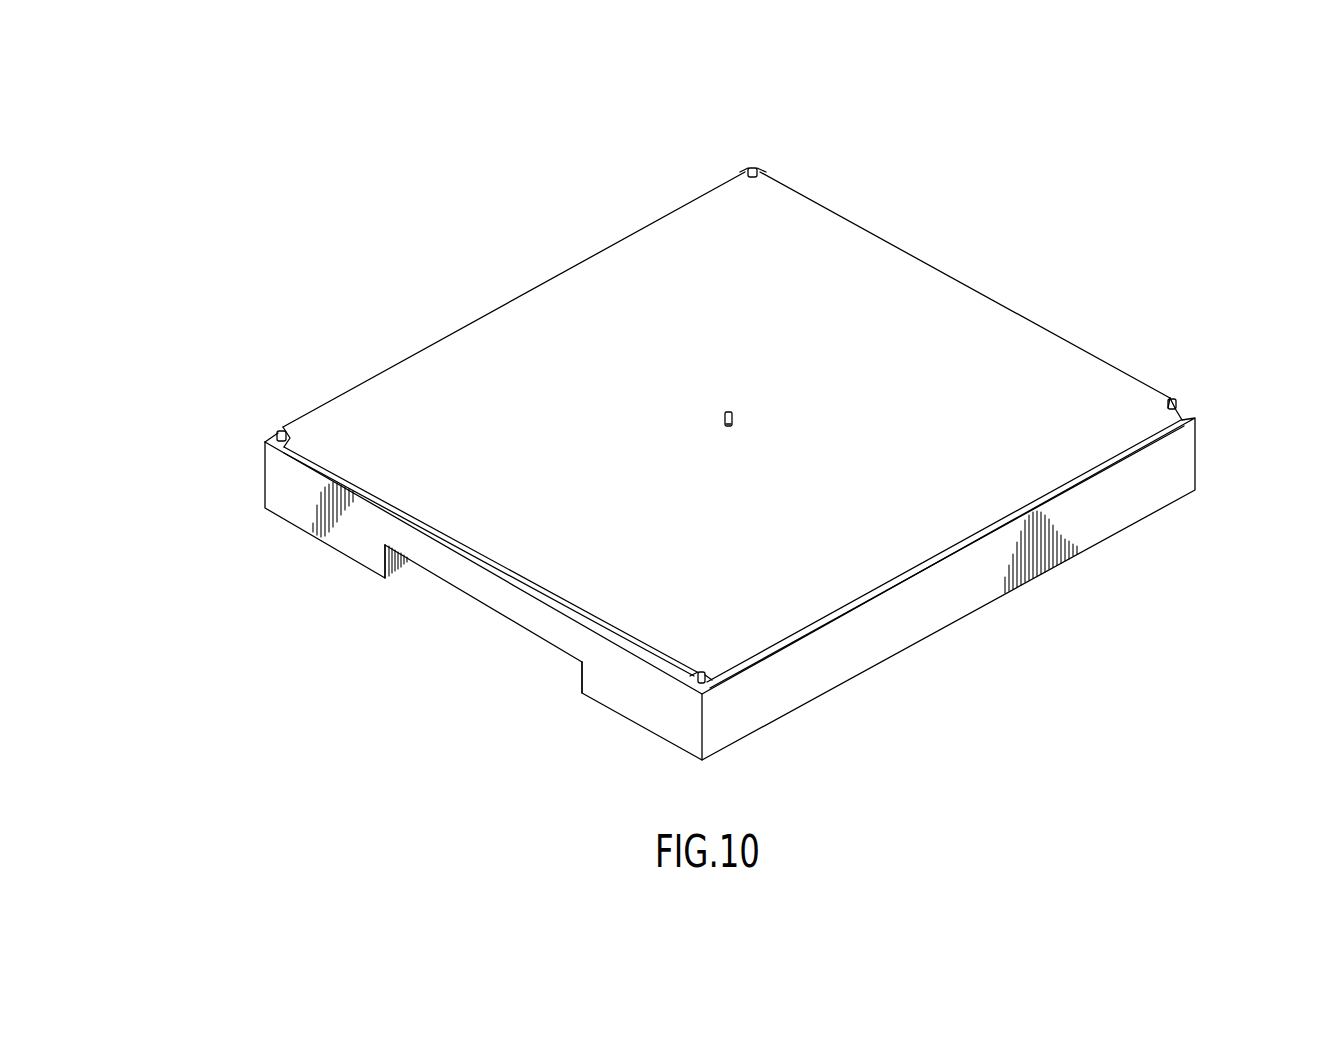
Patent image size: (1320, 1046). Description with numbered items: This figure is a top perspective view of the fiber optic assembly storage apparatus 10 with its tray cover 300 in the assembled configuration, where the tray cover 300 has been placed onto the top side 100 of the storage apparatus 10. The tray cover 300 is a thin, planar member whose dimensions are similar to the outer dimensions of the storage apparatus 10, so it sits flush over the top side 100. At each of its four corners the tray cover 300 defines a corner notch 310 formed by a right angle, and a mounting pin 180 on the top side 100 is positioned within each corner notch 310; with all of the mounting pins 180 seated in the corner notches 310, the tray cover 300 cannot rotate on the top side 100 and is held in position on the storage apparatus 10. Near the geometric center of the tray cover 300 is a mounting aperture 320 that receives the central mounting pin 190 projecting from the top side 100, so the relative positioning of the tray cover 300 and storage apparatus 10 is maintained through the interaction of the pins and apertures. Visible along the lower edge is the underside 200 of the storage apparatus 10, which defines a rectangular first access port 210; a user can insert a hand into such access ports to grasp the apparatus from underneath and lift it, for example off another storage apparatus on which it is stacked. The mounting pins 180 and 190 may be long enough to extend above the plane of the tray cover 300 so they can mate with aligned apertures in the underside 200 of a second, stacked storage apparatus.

The storage apparatus 10 is at (508, 237).
The top side 100 is at (860, 620).
The mounting pin 180 is at (751, 167).
The mounting pin 190 is at (731, 411).
The underside 200 is at (595, 703).
The first access port 210 is at (473, 598).
The tray cover 300 is at (925, 290).
The corner notch 310 is at (771, 156).
The mounting aperture 320 is at (732, 435).